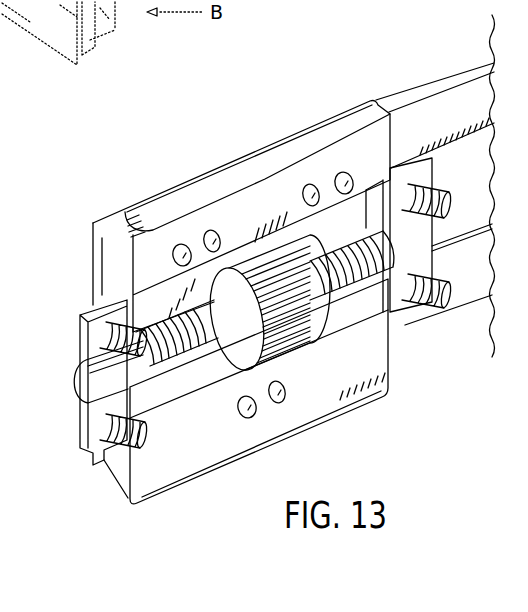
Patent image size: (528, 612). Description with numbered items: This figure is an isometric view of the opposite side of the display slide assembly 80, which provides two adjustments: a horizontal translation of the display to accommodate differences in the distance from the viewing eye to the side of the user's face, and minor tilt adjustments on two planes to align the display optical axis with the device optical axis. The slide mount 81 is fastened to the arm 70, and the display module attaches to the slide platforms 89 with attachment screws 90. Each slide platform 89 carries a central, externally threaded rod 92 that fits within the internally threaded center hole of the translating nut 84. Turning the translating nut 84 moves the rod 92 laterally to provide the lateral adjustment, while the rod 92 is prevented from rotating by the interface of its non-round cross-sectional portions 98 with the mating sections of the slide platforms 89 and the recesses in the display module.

The arm 70 is at (431, 108).
The display slide assembly 80 is at (446, 414).
The slide mount 81 is at (344, 123).
The translating nut 84 is at (242, 265).
The slide platform 89 is at (344, 181).
The attachment screws 90 is at (450, 205).
The externally threaded rod 92 is at (350, 296).
The non-round cross-sectional portions 98 is at (78, 387).